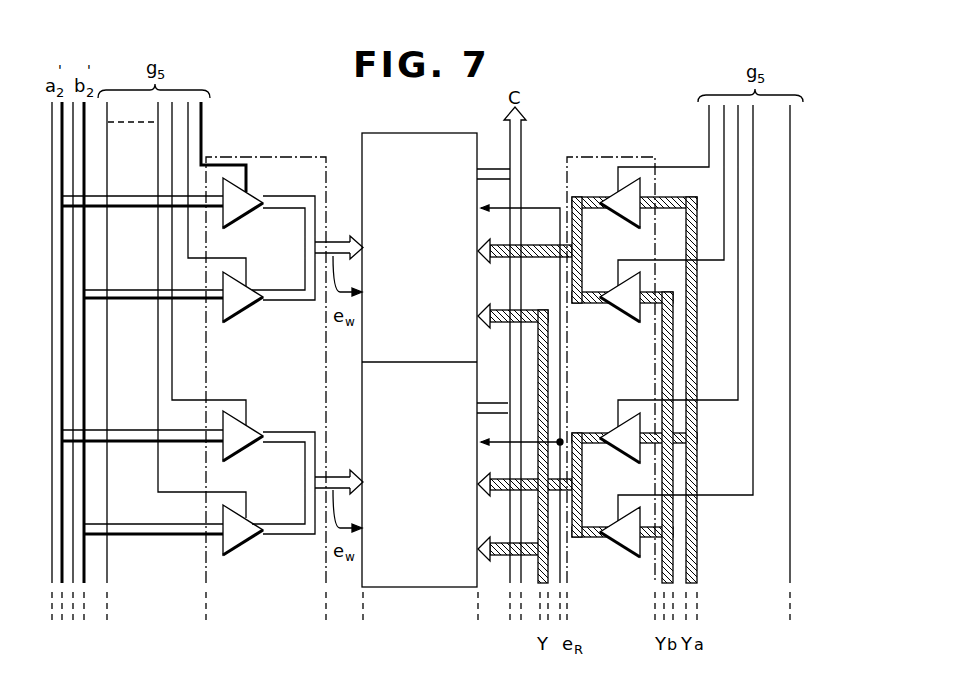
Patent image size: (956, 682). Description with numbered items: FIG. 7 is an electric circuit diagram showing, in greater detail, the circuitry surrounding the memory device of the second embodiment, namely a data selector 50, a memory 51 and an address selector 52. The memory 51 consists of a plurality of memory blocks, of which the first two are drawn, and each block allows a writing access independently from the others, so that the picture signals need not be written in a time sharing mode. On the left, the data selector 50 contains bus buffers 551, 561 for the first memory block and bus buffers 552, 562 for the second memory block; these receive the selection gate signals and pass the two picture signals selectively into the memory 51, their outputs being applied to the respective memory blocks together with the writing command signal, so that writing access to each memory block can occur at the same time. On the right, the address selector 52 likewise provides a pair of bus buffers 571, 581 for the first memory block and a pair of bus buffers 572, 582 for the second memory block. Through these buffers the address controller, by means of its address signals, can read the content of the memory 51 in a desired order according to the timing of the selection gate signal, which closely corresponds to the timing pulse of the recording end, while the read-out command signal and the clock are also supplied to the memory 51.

The data selector 50 is at (284, 352).
The memory 51 is at (396, 127).
The address selector 52 is at (611, 353).
The bus buffer 551 is at (243, 212).
The bus buffer 561 is at (233, 309).
The bus buffer 552 is at (240, 446).
The bus buffer 562 is at (233, 541).
The bus buffer 571 is at (632, 216).
The bus buffer 581 is at (620, 305).
The bus buffer 572 is at (617, 448).
The bus buffer 582 is at (612, 540).